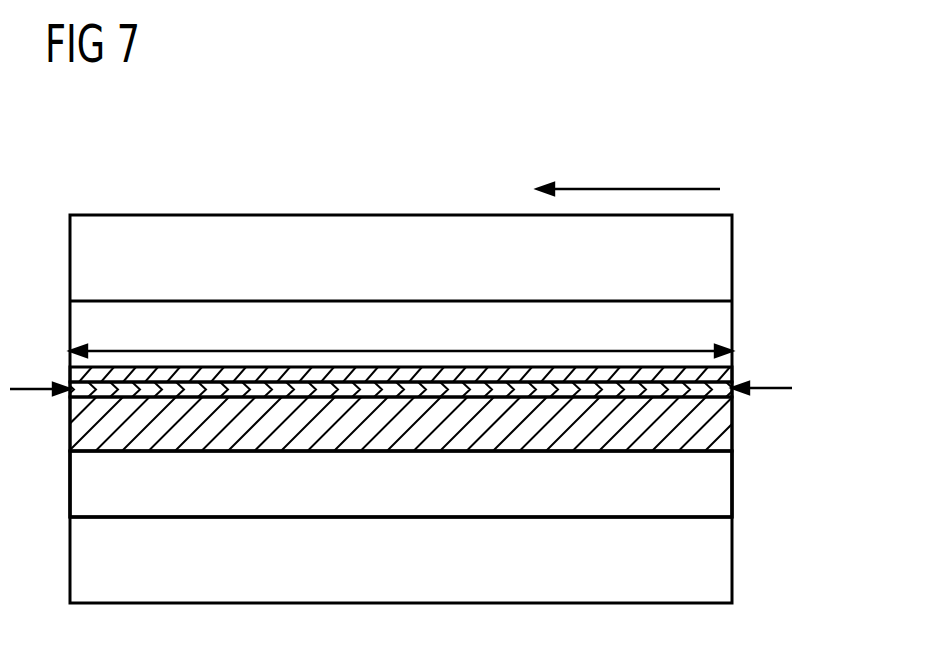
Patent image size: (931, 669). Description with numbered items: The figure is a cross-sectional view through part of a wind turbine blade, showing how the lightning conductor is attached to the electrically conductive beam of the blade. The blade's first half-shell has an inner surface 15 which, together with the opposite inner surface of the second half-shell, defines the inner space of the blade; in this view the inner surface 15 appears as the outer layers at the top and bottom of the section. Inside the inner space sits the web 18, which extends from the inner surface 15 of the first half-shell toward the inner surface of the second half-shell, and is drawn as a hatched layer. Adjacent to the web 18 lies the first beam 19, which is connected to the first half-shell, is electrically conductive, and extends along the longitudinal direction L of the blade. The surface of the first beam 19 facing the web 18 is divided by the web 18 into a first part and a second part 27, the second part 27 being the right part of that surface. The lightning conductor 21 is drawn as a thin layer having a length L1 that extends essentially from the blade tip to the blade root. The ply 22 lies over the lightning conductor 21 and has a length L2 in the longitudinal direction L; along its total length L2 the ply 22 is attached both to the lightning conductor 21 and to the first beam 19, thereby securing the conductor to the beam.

The inner surface 15 is at (586, 283).
The second part 27 is at (424, 501).
The ply 22 is at (722, 373).
The lightning conductor 21 is at (113, 390).
The web 18 is at (708, 435).
The first beam 19 is at (708, 480).
The longitudinal direction L is at (632, 189).
The length of the lightning conductor L1 is at (401, 405).
The length of the ply L2 is at (401, 335).